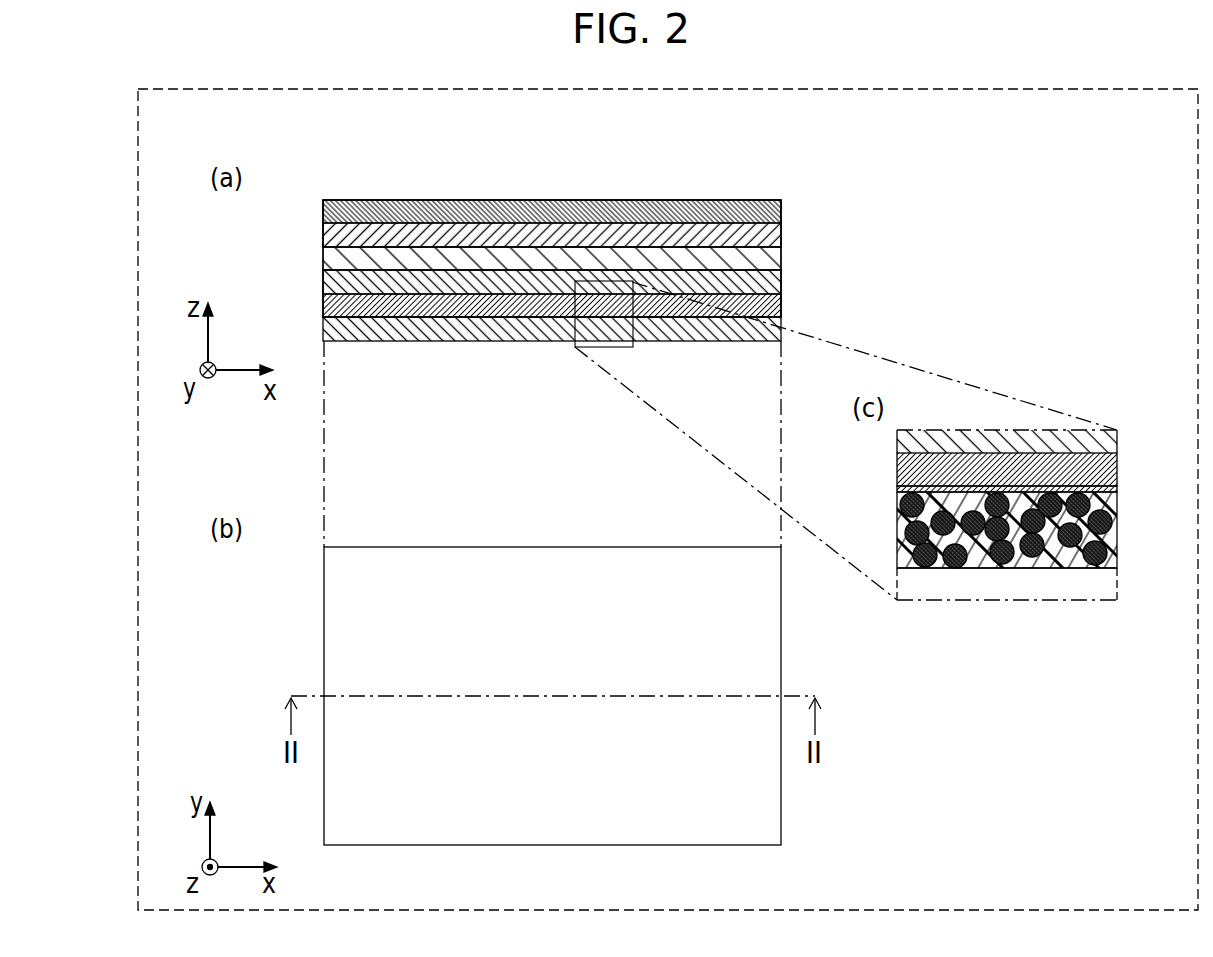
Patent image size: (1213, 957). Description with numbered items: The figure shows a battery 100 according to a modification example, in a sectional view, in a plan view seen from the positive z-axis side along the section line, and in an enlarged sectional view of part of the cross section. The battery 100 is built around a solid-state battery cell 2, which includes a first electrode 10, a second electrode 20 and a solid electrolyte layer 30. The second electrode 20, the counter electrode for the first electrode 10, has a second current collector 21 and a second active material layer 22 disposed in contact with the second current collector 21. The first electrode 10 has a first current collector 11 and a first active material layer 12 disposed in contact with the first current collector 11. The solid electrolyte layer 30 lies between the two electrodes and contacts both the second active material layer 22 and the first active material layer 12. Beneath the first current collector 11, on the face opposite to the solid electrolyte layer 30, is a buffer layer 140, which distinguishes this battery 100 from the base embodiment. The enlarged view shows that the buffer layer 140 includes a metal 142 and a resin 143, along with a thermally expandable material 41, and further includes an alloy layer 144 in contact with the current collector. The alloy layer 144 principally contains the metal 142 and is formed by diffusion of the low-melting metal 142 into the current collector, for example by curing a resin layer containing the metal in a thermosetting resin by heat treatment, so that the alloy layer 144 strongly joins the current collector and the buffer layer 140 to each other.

The battery 100 is at (897, 126).
The solid-state battery cell 2 is at (316, 200).
The second electrode 20 is at (851, 175).
The second current collector 21 is at (781, 207).
The second active material layer 22 is at (781, 232).
The solid electrolyte layer 30 is at (530, 260).
The first electrode 10 is at (851, 278).
The first active material layer 12 is at (781, 283).
The first current collector 11 is at (781, 307).
The buffer layer 140 is at (517, 332).
The metal 142 is at (950, 568).
The resin 143 is at (1028, 560).
The thermally expandable material 41 is at (1050, 492).
The alloy layer 144 is at (1067, 565).